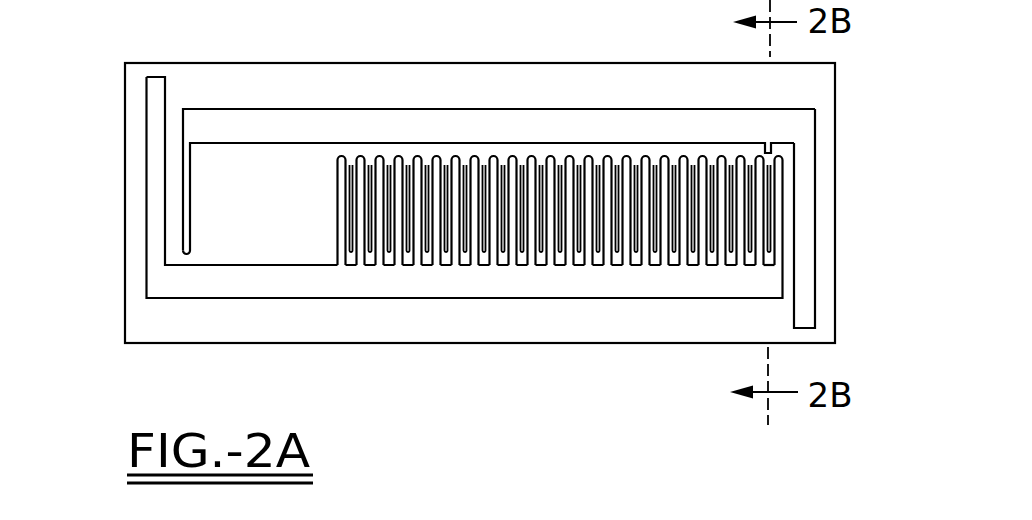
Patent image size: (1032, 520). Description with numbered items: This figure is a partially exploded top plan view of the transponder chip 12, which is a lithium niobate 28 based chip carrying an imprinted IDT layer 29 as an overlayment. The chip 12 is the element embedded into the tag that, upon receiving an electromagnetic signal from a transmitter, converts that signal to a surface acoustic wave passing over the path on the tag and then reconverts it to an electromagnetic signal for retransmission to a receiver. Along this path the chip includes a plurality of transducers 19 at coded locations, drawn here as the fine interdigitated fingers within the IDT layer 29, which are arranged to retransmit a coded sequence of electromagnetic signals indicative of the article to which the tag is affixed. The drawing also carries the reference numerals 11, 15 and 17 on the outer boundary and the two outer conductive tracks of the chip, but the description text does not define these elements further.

The substrate 11 is at (442, 335).
The transponder chip 12 is at (477, 235).
The first electrode 15 is at (156, 197).
The second electrode 17 is at (807, 208).
The transducers 19 is at (599, 262).
The lithium niobate 28 is at (275, 211).
The imprinted IDT layer 29 is at (468, 120).